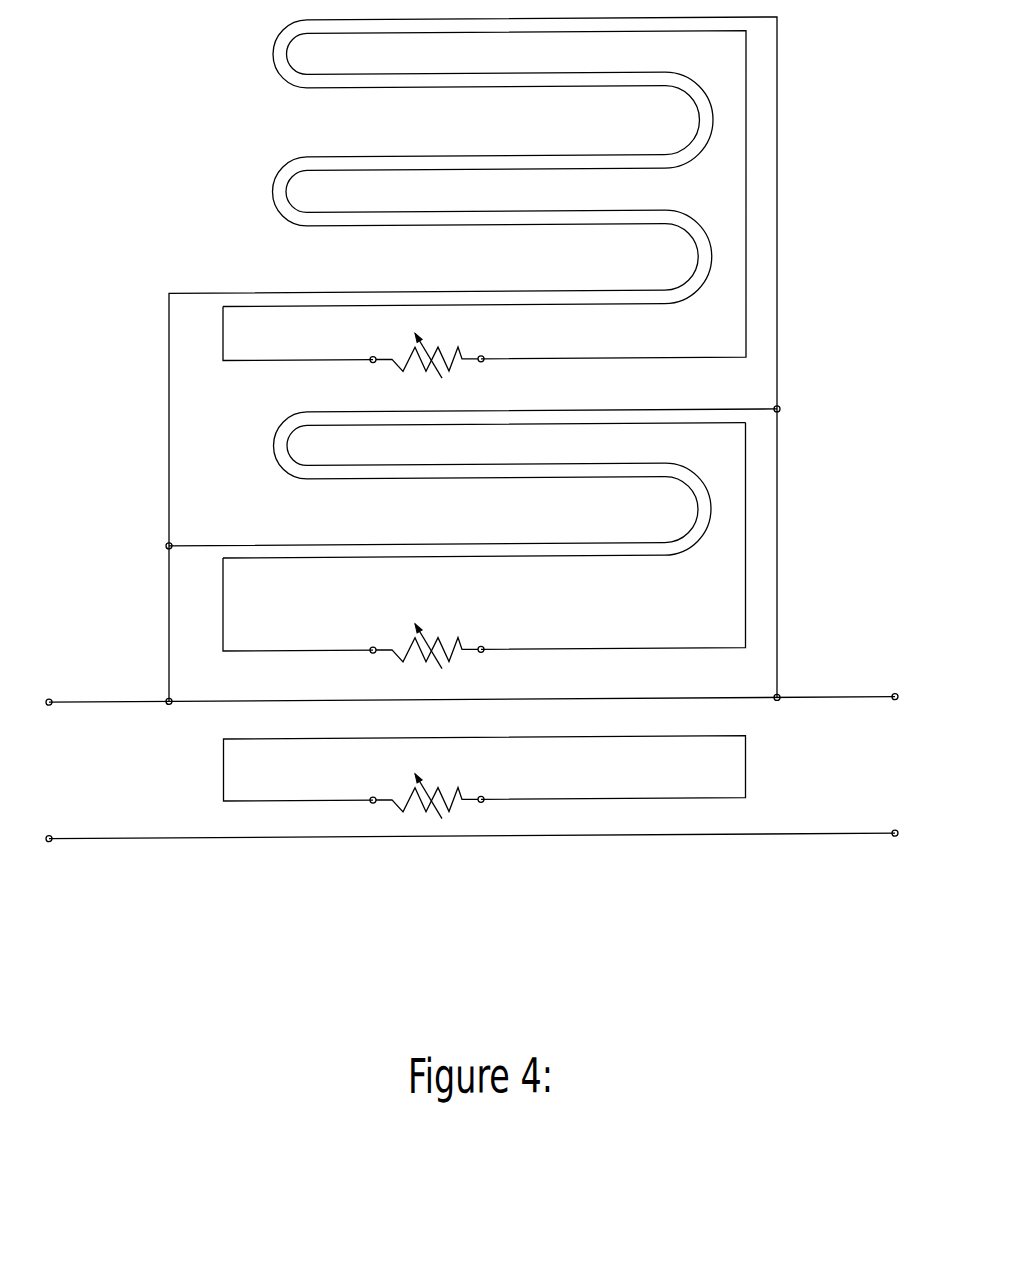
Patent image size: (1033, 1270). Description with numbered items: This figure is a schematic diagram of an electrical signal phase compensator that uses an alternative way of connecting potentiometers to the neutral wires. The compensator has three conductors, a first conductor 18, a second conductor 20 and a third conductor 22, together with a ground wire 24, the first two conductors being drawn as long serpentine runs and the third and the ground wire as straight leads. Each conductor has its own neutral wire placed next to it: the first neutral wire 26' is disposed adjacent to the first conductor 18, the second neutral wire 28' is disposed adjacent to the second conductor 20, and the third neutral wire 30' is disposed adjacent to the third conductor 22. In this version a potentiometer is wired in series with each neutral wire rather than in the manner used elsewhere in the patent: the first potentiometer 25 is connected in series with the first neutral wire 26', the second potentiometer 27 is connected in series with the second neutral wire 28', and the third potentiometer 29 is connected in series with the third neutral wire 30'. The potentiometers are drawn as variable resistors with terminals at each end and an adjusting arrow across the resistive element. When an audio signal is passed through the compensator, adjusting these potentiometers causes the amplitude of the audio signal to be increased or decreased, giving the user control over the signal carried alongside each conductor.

The first conductor 18 is at (416, 359).
The second conductor 20 is at (417, 482).
The third conductor 22 is at (472, 651).
The ground wire 24 is at (466, 792).
The first potentiometer 25 is at (630, 312).
The first neutral wire 26' is at (400, 354).
The second potentiometer 27 is at (630, 598).
The second neutral wire 28' is at (561, 524).
The third potentiometer 29 is at (534, 862).
The third neutral wire 30' is at (511, 814).